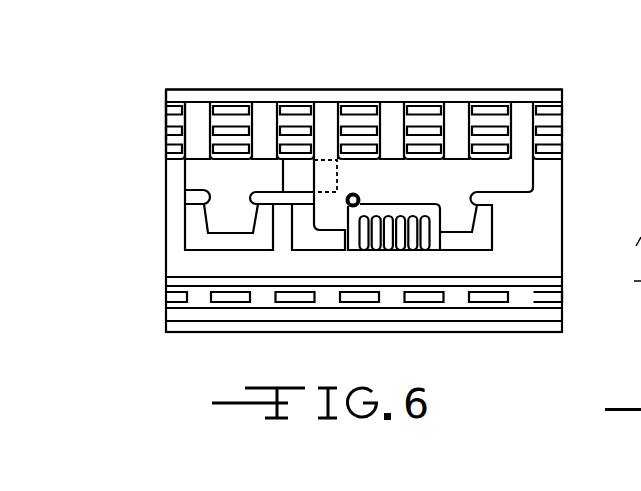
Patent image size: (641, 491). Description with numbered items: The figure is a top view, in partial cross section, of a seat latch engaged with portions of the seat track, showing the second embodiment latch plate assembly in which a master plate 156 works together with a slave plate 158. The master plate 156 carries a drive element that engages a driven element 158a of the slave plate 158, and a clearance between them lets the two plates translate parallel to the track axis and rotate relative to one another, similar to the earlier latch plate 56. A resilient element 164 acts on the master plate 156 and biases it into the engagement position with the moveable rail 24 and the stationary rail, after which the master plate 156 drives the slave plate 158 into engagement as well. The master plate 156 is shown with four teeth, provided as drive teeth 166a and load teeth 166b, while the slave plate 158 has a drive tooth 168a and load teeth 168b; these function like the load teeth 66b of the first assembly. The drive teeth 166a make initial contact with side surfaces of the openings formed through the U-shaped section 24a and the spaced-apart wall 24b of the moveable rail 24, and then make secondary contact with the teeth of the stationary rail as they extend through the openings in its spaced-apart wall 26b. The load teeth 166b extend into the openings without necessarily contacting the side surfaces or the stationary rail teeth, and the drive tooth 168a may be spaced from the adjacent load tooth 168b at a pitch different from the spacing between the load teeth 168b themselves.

The moveable rail 24 is at (167, 221).
The U-shaped section 24a is at (167, 147).
The spaced-apart wall 24b is at (181, 110).
The spaced-apart wall 26b is at (162, 124).
The latch plate 56 is at (624, 282).
The load teeth 66b is at (623, 216).
The master plate 156 is at (524, 172).
The slave plate 158 is at (197, 153).
The driven element 158a is at (338, 165).
The resilient element 164 is at (360, 252).
The drive teeth 166a is at (330, 108).
The load teeth 166b is at (393, 108).
The drive tooth 168a is at (265, 110).
The load teeth 168b is at (191, 110).